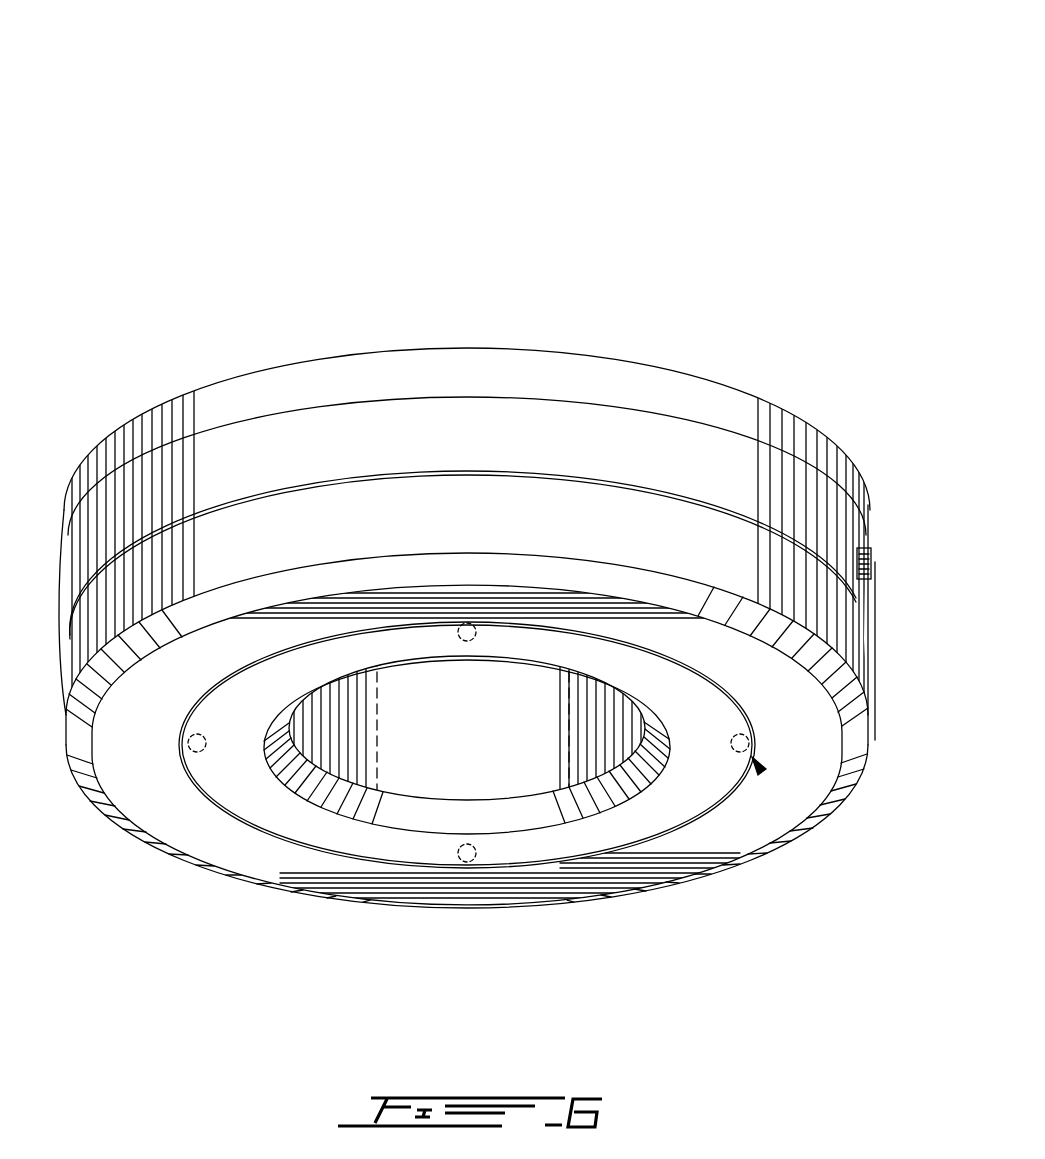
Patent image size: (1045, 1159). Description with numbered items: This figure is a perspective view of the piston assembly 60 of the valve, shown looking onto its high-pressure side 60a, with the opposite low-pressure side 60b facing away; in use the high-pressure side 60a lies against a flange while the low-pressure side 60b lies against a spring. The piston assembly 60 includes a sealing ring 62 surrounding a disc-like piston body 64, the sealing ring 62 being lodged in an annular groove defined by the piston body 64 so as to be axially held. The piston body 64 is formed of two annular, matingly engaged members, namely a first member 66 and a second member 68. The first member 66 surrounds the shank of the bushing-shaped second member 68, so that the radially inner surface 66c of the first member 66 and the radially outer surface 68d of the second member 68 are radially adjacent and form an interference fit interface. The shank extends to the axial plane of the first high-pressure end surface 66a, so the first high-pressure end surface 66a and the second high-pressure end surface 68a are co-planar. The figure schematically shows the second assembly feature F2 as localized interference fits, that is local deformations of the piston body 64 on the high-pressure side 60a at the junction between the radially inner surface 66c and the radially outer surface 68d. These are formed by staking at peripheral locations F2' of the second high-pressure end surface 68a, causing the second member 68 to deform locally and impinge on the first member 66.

The piston assembly 60 is at (110, 146).
The high-pressure side 60a is at (625, 918).
The low-pressure side 60b is at (490, 290).
The sealing ring 62 is at (503, 448).
The piston body 64 is at (467, 680).
The first member 66 is at (467, 801).
The first high-pressure end surface 66a is at (467, 801).
The radially inner surface 66c is at (667, 817).
The second member 68 is at (466, 626).
The second high-pressure end surface 68a is at (468, 742).
The radially outer surface 68d is at (713, 815).
The second assembly feature F2 is at (827, 799).
The peripheral location F2' is at (839, 733).